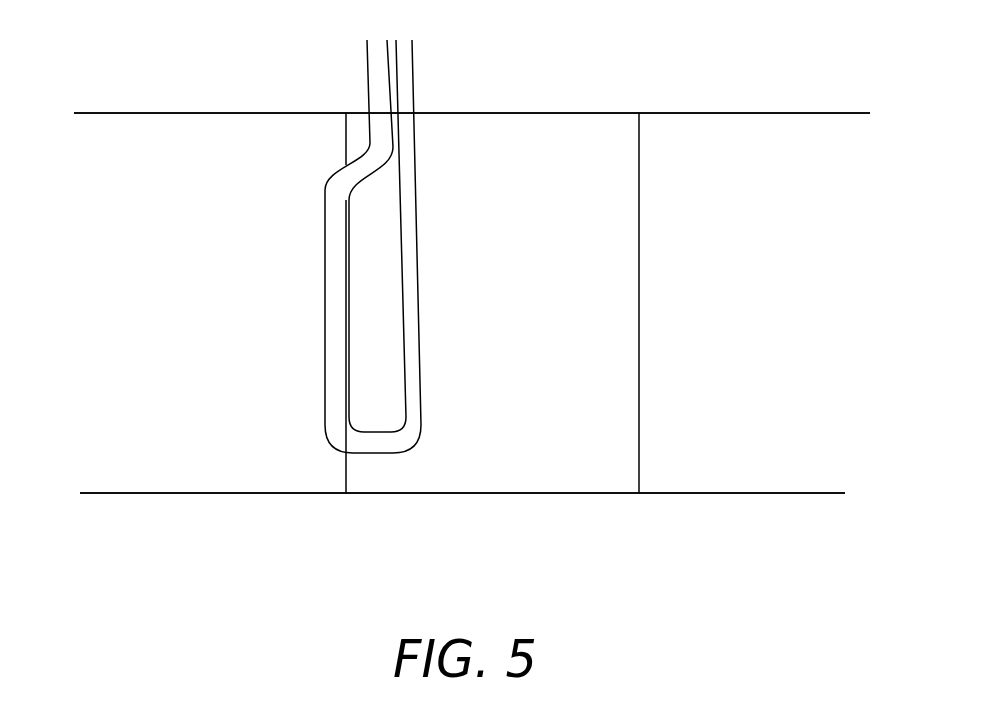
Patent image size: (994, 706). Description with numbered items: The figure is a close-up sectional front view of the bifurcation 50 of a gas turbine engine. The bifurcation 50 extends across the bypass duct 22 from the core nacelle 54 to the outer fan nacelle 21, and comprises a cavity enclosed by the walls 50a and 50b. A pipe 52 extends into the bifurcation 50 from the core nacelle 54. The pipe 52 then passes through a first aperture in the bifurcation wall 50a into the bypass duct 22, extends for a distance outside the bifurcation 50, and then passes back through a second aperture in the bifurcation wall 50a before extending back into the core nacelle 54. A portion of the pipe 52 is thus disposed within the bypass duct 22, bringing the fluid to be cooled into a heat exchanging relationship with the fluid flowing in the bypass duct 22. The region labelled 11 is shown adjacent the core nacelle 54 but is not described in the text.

The upper layer 11 is at (464, 96).
The outer fan nacelle 21 is at (449, 532).
The bypass duct 22 is at (278, 294).
The bifurcation 50 is at (541, 303).
The bifurcation wall 50a is at (349, 468).
The bifurcation wall 50b is at (640, 432).
The pipe 52 is at (414, 170).
The core nacelle 54 is at (228, 113).